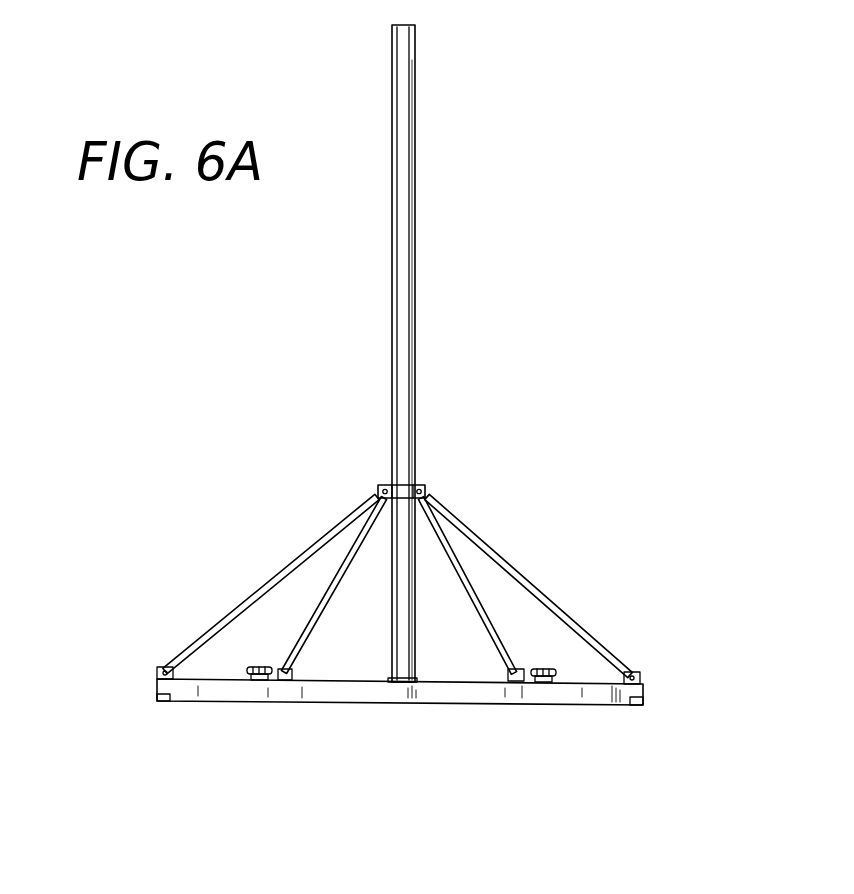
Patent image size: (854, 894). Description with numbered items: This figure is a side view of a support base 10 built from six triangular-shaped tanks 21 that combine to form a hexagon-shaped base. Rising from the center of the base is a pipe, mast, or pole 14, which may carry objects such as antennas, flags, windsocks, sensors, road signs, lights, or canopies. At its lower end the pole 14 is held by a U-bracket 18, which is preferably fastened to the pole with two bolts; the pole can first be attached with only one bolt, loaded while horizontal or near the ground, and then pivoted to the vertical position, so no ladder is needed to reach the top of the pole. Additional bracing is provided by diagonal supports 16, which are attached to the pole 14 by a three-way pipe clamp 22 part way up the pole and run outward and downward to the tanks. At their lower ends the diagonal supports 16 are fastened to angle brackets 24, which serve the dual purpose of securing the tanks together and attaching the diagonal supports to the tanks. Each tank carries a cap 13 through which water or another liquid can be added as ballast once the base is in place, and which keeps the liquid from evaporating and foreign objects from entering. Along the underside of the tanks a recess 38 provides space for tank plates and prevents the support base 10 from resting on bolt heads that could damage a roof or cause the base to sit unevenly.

The support base 10 is at (566, 414).
The pole 14 is at (416, 393).
The three-way pipe clamp 22 is at (378, 487).
The diagonal supports 16 is at (284, 571).
The angle brackets 24 is at (158, 668).
The cap 13 is at (250, 669).
The U-bracket 18 is at (380, 683).
The triangular-shaped tanks 21 is at (197, 703).
The recess 38 is at (157, 703).